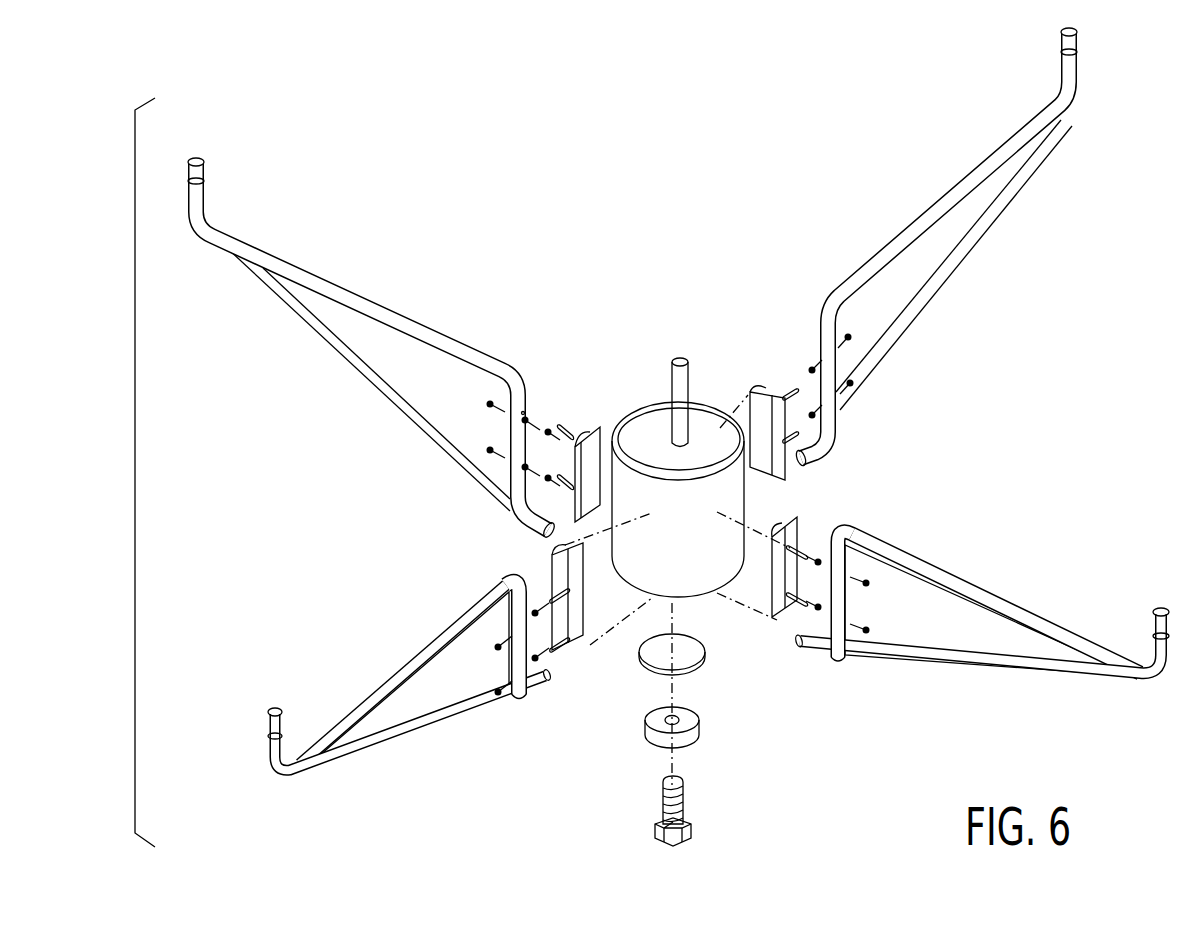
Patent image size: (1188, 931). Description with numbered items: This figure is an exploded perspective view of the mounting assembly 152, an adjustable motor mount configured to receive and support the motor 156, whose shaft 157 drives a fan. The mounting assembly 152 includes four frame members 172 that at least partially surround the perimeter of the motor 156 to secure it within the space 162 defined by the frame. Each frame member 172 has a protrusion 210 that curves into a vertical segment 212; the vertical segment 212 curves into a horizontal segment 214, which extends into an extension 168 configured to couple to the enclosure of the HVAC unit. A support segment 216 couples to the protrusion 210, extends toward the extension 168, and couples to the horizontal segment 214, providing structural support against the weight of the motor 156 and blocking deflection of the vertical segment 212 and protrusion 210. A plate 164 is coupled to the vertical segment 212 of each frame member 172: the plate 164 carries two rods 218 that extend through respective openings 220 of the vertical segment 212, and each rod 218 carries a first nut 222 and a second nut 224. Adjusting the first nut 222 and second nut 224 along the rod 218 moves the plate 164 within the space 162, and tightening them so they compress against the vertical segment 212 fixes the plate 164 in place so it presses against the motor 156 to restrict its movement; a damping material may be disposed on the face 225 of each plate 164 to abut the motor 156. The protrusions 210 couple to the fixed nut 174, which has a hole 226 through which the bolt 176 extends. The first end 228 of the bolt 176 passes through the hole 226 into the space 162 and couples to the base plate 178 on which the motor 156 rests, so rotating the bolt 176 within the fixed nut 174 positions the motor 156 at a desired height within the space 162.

The mounting assembly 152 is at (678, 437).
The motor 156 is at (702, 408).
The shaft 157 is at (676, 390).
The space 162 is at (792, 673).
The plate 164 is at (584, 438).
The extension 168 is at (204, 171).
The frame member 172 is at (678, 399).
The fixed nut 174 is at (663, 737).
The bolt 176 is at (669, 799).
The base plate 178 is at (690, 651).
The protrusion 210 is at (548, 530).
The vertical segment 212 is at (521, 402).
The horizontal segment 214 is at (452, 346).
The support segment 216 is at (383, 380).
The rod 218 is at (527, 441).
The opening 220 is at (524, 413).
The first nut 222 is at (488, 402).
The second nut 224 is at (551, 430).
The face 225 is at (773, 393).
The hole 226 is at (678, 722).
The first end 228 is at (677, 781).